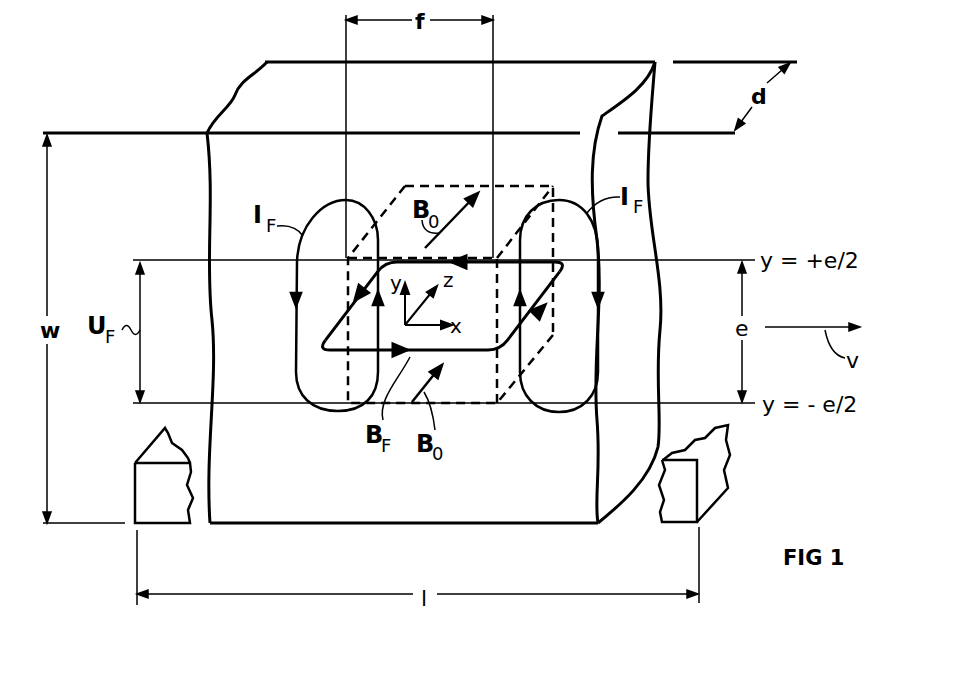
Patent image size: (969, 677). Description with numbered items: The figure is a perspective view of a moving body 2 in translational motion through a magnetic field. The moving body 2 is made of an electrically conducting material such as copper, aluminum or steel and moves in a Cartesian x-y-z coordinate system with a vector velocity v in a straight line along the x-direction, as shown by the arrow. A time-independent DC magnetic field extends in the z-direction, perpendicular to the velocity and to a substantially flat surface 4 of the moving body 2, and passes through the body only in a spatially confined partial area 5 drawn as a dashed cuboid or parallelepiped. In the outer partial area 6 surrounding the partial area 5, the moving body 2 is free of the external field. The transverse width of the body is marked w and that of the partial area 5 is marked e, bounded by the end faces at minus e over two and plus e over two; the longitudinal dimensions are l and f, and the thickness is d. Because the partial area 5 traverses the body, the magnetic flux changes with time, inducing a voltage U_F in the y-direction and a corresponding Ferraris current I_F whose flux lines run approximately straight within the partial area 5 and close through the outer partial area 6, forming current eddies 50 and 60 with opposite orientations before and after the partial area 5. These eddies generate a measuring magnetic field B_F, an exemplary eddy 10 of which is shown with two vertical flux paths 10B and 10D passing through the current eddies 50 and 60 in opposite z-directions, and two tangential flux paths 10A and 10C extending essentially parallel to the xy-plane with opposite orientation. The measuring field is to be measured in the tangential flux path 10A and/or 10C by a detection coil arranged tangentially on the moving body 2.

The moving body 2 is at (535, 492).
The flat surface 4 is at (400, 500).
The partial area 5 is at (450, 206).
The outer partial area 6 is at (263, 110).
The eddy of the measuring magnetic field 10 is at (473, 341).
The tangential flux path 10A is at (463, 352).
The vertical flux path 10B is at (540, 322).
The tangential flux path 10C is at (548, 262).
The vertical flux path 10D is at (340, 320).
The current eddy 50 is at (338, 200).
The current eddy 60 is at (567, 198).